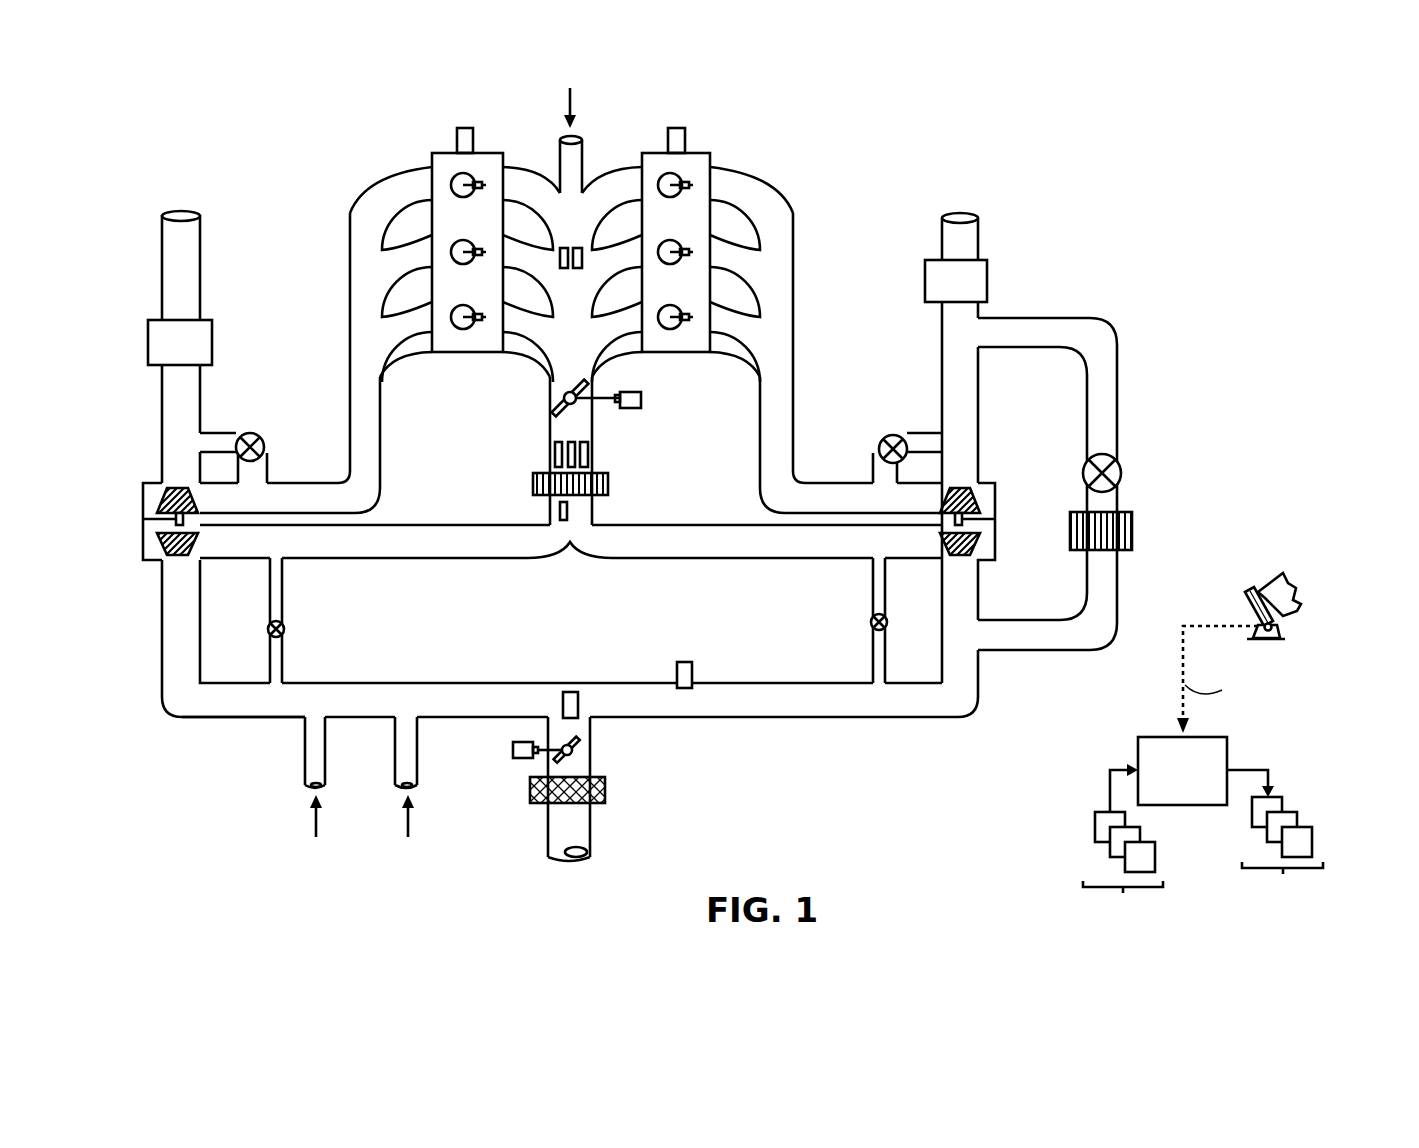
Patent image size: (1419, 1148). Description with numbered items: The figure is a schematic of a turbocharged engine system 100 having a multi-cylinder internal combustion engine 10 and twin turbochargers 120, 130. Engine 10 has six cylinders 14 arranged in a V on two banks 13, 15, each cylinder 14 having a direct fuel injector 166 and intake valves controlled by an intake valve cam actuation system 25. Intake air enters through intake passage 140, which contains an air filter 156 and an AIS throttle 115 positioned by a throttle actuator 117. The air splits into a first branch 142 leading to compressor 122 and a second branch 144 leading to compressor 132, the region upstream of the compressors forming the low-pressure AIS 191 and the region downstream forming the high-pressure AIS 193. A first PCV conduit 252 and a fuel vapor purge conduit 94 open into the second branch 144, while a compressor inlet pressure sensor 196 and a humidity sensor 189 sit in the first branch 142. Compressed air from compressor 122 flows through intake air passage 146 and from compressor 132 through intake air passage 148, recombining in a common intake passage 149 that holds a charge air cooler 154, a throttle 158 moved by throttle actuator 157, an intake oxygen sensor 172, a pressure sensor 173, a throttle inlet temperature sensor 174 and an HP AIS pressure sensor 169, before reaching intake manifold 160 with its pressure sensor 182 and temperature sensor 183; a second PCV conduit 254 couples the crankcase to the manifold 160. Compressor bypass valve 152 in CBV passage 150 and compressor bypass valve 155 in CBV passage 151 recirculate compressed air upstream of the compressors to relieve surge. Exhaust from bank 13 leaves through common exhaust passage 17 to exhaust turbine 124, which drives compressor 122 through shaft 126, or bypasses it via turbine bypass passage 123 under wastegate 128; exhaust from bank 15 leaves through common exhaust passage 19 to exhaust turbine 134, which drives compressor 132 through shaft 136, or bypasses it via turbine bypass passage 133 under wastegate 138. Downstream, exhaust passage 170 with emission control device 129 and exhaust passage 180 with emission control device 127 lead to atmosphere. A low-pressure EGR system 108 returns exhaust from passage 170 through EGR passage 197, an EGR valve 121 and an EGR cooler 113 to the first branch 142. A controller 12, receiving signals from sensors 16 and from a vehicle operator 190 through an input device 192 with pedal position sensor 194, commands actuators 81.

The turbocharged engine system 100 is at (1340, 96).
The internal combustion engine 10 is at (874, 146).
The second cylinder bank 15 is at (432, 153).
The first cylinder bank 13 is at (708, 153).
The intake valve cam actuation system 25 is at (466, 128).
The second PCV conduit 254 is at (582, 152).
The cylinder 14 is at (680, 241).
The fuel injector 166 is at (693, 247).
The intake manifold 160 is at (551, 231).
The intake manifold pressure sensor 182 is at (562, 268).
The intake manifold temperature sensor 183 is at (579, 268).
The exhaust passage 180 is at (200, 278).
The emission control device 127 is at (166, 353).
The exhaust passage 170 is at (942, 240).
The emission control device 129 is at (942, 292).
The low-pressure EGR system 108 is at (1129, 297).
The EGR passage 197 is at (1117, 390).
The EGR valve 121 is at (1121, 461).
The EGR cooler 113 is at (1131, 512).
The common exhaust passage 19 is at (350, 407).
The common exhaust passage 17 is at (793, 412).
The turbine bypass passage 133 is at (218, 433).
The wastegate 138 is at (262, 438).
The turbine bypass passage 123 is at (927, 433).
The wastegate 128 is at (881, 440).
The turbocharger 130 is at (180, 470).
The exhaust turbine 134 is at (163, 488).
The shaft 136 is at (157, 520).
The compressor 132 is at (183, 550).
The turbocharger 120 is at (964, 467).
The exhaust turbine 124 is at (968, 490).
The shaft 126 is at (965, 522).
The compressor 122 is at (960, 553).
The common intake passage 149 is at (550, 383).
The throttle 158 is at (565, 392).
The throttle actuator 157 is at (638, 398).
The intake oxygen sensor 172 is at (555, 455).
The pressure sensor 173 is at (568, 441).
The throttle inlet temperature sensor 174 is at (585, 447).
The charge air cooler 154 is at (608, 486).
The HP AIS pressure sensor 169 is at (560, 513).
The high-pressure AIS system 193 is at (354, 552).
The intake air passage 148 is at (398, 558).
The intake air passage 146 is at (745, 558).
The CBV passage 150 is at (283, 602).
The compressor bypass valve 152 is at (286, 630).
The CBV passage 151 is at (886, 592).
The compressor bypass valve 155 is at (888, 622).
The low-pressure AIS system 191 is at (344, 711).
The second branch of intake passage 144 is at (335, 683).
The first branch of intake passage 142 is at (758, 683).
The compressor inlet pressure sensor 196 is at (578, 685).
The humidity sensor 189 is at (690, 662).
The first PCV conduit 252 is at (305, 752).
The fuel vapor purge conduit 94 is at (395, 752).
The intake passage 140 is at (590, 825).
The AIS throttle 115 is at (583, 752).
The throttle actuator 117 is at (513, 746).
The air filter 156 is at (605, 790).
The vehicle operator 190 is at (1298, 588).
The input device 192 is at (1250, 605).
The pedal position sensor 194 is at (1283, 632).
The controller 12 is at (1182, 771).
The sensors 16 is at (1123, 851).
The actuators 81 is at (1278, 844).